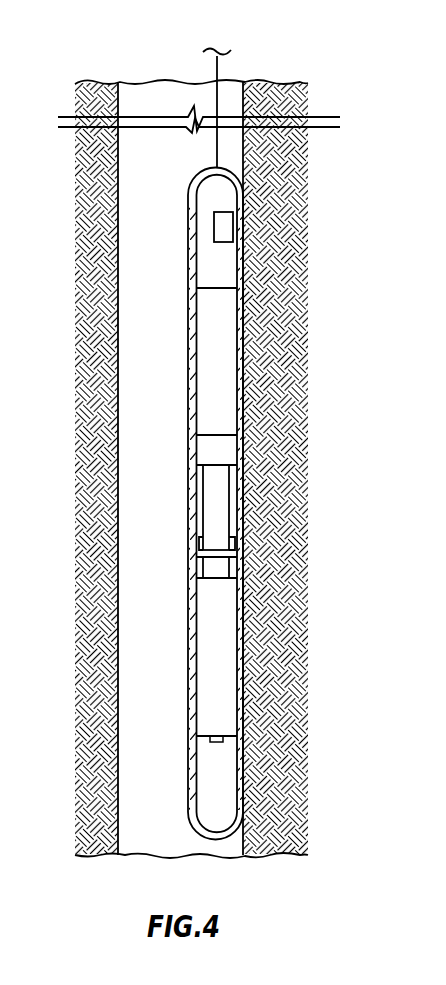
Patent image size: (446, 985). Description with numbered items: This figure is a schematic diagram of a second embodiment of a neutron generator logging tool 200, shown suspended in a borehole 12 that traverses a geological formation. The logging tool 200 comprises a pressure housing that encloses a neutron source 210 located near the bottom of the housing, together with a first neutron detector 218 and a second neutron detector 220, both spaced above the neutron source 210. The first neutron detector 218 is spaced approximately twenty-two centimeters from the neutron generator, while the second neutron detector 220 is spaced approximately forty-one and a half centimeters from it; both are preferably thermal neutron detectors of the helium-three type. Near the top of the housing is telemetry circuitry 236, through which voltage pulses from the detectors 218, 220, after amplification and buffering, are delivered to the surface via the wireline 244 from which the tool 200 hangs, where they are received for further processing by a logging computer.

The borehole 12 is at (119, 222).
The logging tool 200 is at (321, 197).
The wireline 244 is at (218, 66).
The telemetry circuitry 236 is at (227, 228).
The second neutron detector 220 is at (223, 352).
The first neutron detector 218 is at (220, 498).
The neutron source 210 is at (217, 768).